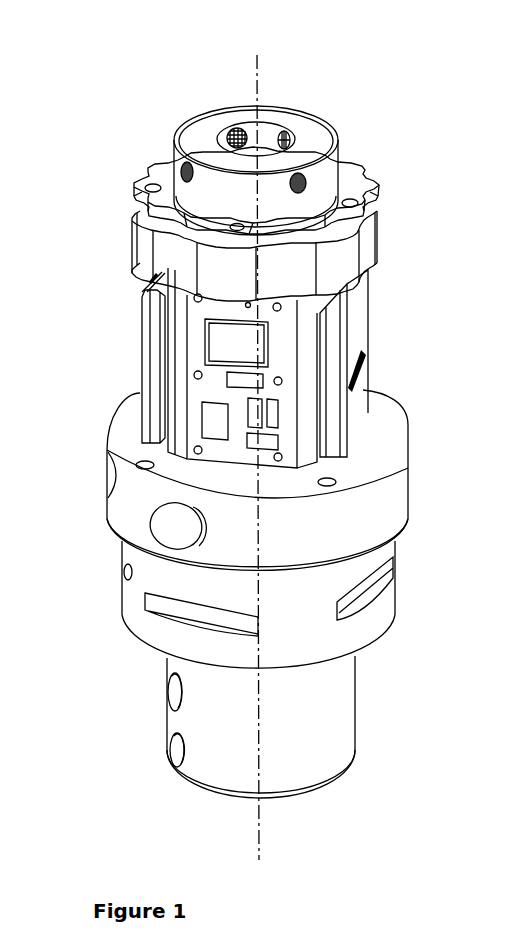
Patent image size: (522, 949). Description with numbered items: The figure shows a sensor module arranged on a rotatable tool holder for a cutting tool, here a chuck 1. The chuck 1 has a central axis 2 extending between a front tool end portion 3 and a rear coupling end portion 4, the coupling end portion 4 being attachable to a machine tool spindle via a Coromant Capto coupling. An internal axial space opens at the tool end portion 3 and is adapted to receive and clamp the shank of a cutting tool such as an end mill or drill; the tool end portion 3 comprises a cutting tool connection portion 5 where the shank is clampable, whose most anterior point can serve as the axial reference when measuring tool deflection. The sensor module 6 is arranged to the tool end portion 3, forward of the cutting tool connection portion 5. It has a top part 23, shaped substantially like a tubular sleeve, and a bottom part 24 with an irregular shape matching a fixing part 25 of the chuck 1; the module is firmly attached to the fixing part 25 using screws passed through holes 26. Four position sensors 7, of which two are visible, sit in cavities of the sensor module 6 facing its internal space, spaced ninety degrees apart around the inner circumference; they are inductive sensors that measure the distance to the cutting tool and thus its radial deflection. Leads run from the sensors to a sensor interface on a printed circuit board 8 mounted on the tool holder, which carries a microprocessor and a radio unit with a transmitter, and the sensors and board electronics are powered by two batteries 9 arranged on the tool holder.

The chuck 1 is at (390, 352).
The central axis 2 is at (250, 68).
The front tool end portion 3 is at (85, 155).
The rear coupling end portion 4 is at (87, 610).
The cutting tool connection portion 5 is at (127, 235).
The sensor module 6 is at (355, 157).
The position sensors 7 is at (282, 138).
The printed circuit board 8 is at (233, 453).
The batteries 9 is at (150, 371).
The top part 23 is at (323, 157).
The bottom part 24 is at (370, 215).
The fixing part 25 is at (370, 253).
The holes 26 is at (357, 207).